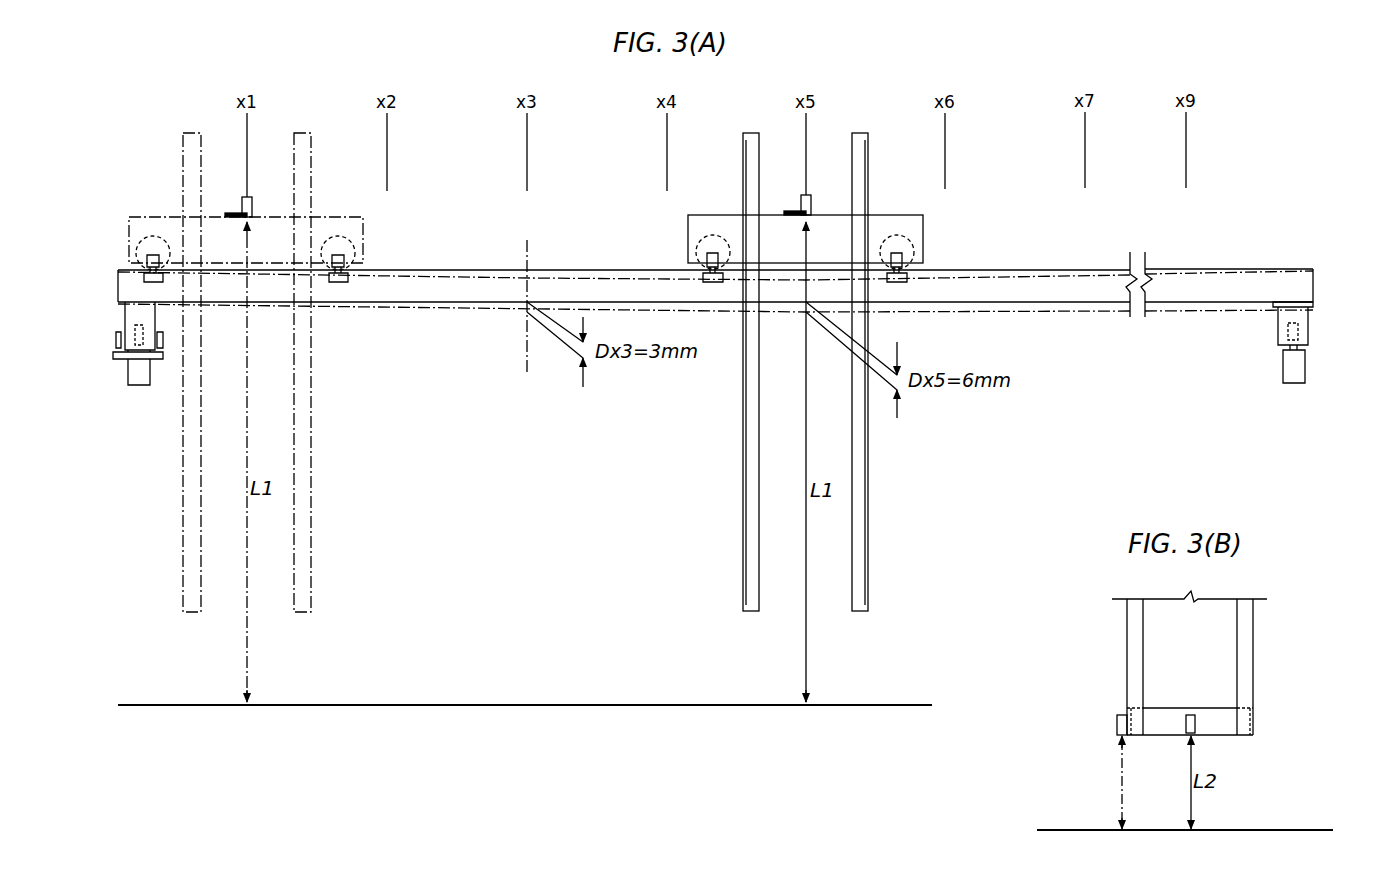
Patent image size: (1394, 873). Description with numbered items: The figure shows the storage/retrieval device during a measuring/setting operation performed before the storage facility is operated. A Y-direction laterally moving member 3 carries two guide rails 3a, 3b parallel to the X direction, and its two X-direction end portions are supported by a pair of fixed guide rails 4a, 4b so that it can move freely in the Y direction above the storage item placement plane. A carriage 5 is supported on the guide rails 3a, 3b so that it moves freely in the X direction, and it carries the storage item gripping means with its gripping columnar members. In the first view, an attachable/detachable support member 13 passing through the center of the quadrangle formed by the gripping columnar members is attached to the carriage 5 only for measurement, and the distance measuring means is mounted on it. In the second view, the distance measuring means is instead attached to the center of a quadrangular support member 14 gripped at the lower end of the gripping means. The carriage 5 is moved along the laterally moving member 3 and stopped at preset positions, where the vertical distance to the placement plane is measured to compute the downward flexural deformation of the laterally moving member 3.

The Y-direction laterally moving member 3 is at (1201, 266).
The guide rail 3a is at (623, 283).
The guide rail 3b is at (715, 250).
The fixed guide rail 4a is at (140, 386).
The fixed guide rail 4b is at (1290, 362).
The carriage 5 is at (352, 228).
The support member 13 is at (235, 213).
The support member 14 is at (1215, 713).